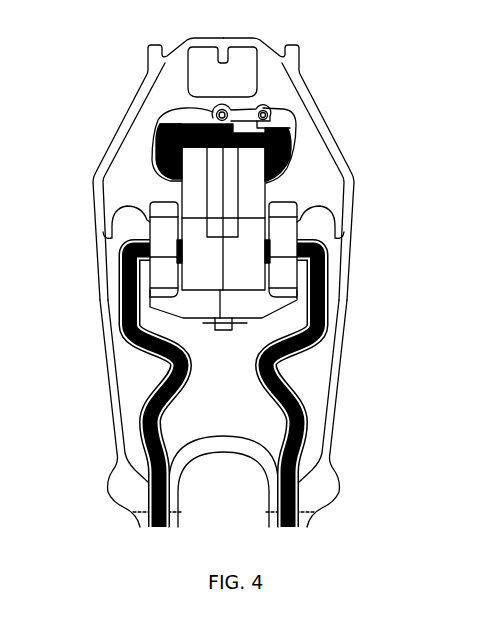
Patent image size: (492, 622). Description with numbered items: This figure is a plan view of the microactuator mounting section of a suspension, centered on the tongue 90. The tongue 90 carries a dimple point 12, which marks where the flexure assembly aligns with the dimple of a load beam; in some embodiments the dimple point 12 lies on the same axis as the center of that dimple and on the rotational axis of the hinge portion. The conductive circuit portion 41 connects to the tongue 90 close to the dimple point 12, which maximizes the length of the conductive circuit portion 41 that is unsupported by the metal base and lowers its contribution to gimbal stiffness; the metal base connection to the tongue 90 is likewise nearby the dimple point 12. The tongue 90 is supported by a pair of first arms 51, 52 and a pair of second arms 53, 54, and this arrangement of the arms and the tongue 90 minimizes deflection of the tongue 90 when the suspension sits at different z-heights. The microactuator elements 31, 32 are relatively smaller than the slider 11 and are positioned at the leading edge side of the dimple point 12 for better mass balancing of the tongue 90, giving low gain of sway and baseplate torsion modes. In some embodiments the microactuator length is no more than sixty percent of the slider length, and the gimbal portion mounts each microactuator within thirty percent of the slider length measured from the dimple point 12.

The slider 11 is at (252, 178).
The dimple point 12 is at (225, 215).
The microactuator element 31 is at (170, 233).
The microactuator element 32 is at (282, 238).
The conductive circuit portion 41 is at (250, 370).
The first arm 51 is at (110, 363).
The first arm 52 is at (330, 375).
The second arm 53 is at (123, 128).
The second arm 54 is at (318, 122).
The tongue 90 is at (188, 337).